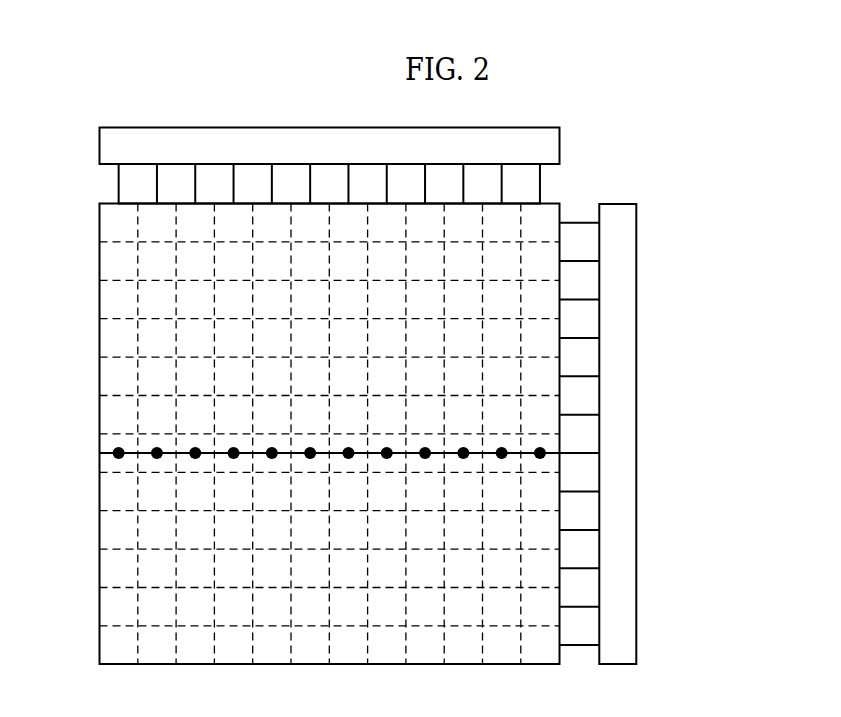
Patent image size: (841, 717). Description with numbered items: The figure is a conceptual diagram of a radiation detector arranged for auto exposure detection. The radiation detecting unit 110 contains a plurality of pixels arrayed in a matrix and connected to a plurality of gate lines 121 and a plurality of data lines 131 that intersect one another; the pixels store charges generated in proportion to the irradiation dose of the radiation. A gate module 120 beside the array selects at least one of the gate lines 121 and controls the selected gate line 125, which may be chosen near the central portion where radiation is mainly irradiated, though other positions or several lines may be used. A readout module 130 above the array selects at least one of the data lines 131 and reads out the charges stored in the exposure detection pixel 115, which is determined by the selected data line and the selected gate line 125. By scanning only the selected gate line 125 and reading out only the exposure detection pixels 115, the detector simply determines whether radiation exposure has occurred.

The radiation detecting unit 110 is at (99, 263).
The exposure detection pixel 115 is at (118, 447).
The gate module 120 is at (618, 204).
The gate lines 121 is at (580, 222).
The selected gate line 125 is at (108, 457).
The readout module 130 is at (561, 146).
The data lines 131 is at (117, 183).